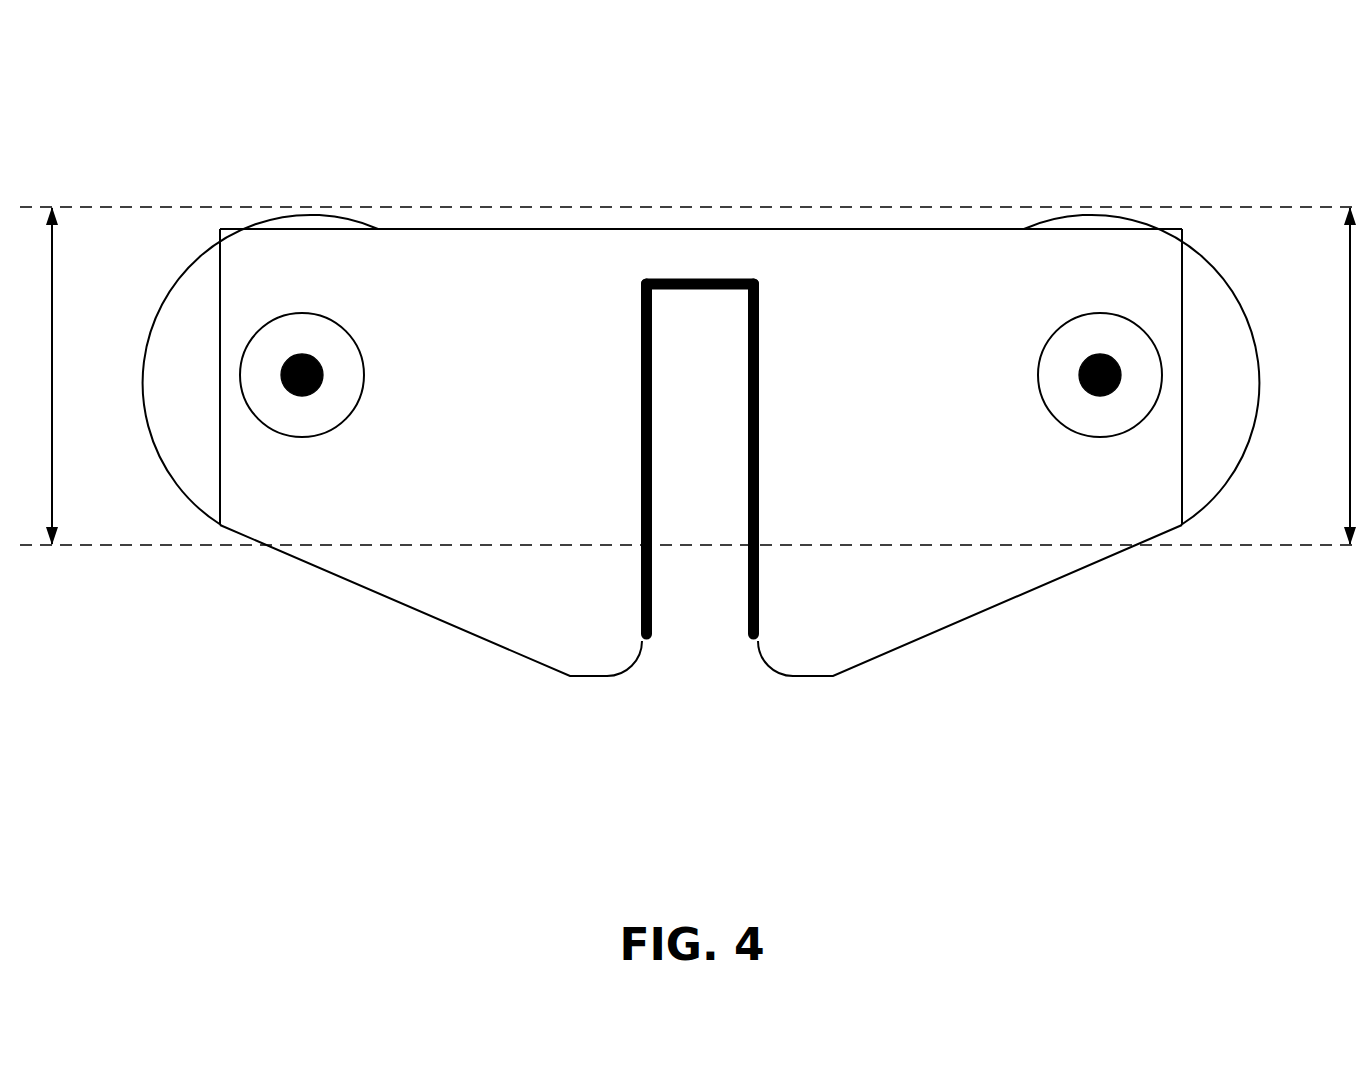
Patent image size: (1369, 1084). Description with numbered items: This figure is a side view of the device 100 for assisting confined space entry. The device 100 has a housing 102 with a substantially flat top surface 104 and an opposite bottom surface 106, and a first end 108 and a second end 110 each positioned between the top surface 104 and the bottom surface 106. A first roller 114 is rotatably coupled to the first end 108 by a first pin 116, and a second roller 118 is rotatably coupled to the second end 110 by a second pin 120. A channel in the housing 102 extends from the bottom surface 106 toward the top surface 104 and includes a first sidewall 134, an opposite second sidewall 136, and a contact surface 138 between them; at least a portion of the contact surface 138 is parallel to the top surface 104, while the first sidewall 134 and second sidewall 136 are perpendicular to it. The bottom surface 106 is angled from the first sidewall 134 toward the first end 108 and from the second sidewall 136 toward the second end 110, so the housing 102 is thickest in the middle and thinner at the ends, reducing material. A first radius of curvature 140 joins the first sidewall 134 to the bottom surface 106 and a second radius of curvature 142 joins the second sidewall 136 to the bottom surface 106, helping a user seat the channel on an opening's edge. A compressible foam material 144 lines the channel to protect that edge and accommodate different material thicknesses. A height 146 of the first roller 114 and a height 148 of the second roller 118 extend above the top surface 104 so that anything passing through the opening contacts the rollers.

The device 100 is at (82, 92).
The housing 102 is at (548, 248).
The top surface 104 is at (690, 228).
The bottom surface 106 is at (965, 620).
The first end 108 is at (212, 287).
The second end 110 is at (1190, 287).
The first roller 114 is at (363, 215).
The first pin 116 is at (302, 375).
The second roller 118 is at (1040, 217).
The second pin 120 is at (1100, 375).
The first sidewall 134 is at (655, 600).
The second sidewall 136 is at (748, 610).
The contact surface 138 is at (713, 290).
The first radius of curvature 140 is at (610, 675).
The second radius of curvature 142 is at (785, 672).
The foam material 144 is at (653, 468).
The height of the first roller 146 is at (52, 430).
The height of the second roller 148 is at (1350, 430).